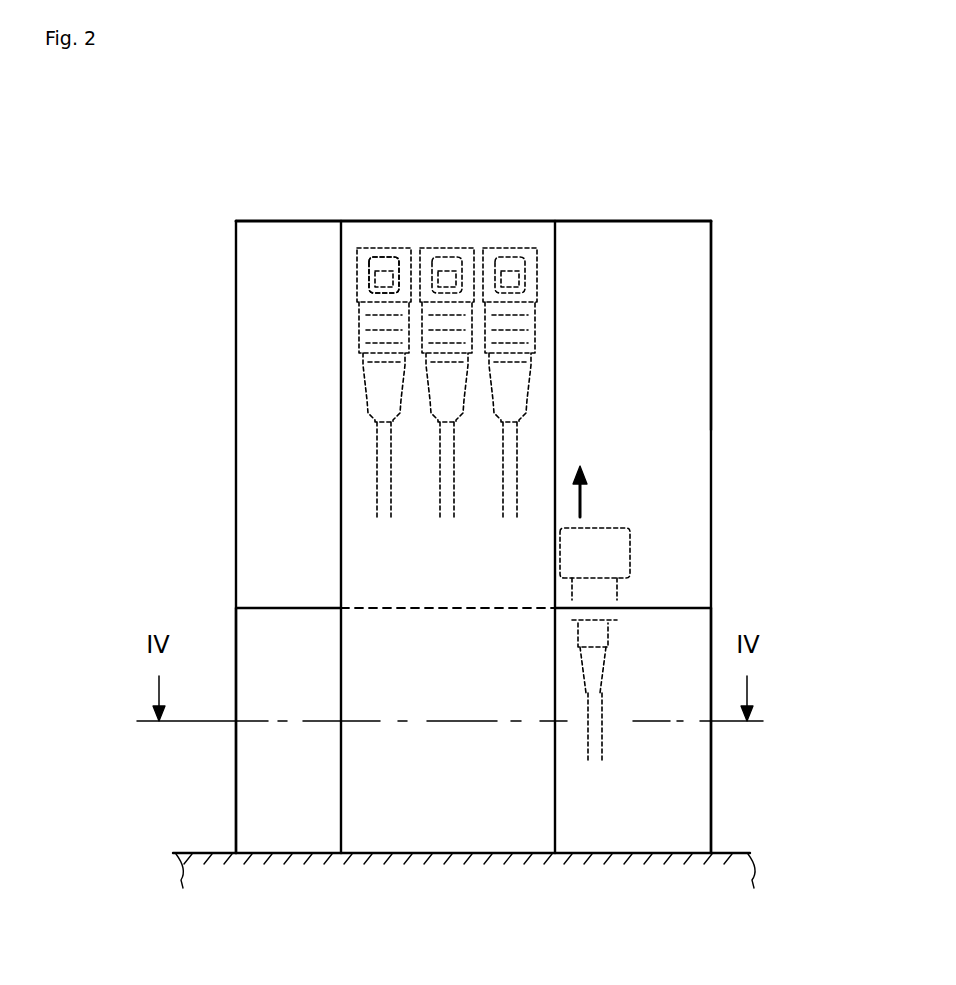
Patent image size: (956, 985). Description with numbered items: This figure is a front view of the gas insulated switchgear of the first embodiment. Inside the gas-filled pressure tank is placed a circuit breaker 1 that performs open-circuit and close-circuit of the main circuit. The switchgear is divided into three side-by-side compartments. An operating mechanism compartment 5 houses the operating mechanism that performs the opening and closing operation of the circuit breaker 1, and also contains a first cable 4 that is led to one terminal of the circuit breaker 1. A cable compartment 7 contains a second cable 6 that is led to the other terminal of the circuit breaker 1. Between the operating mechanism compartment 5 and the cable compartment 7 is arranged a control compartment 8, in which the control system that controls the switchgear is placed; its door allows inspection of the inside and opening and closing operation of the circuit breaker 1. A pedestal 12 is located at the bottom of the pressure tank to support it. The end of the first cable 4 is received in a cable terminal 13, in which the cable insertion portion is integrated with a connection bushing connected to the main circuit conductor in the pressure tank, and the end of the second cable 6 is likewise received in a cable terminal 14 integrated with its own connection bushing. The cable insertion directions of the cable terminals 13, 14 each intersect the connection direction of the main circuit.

The circuit breaker 1 is at (267, 286).
The first cable 4 is at (587, 760).
The operating mechanism compartment 5 is at (698, 792).
The second cable 6 is at (377, 487).
The cable compartment 7 is at (493, 219).
The control compartment 8 is at (695, 261).
The pedestal 12 is at (237, 767).
The cable terminal 13 is at (603, 582).
The cable terminal 14 is at (372, 308).